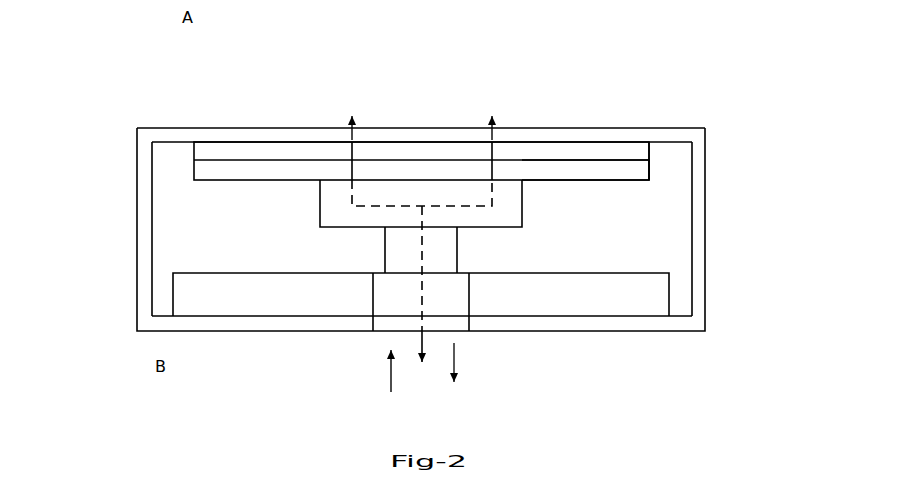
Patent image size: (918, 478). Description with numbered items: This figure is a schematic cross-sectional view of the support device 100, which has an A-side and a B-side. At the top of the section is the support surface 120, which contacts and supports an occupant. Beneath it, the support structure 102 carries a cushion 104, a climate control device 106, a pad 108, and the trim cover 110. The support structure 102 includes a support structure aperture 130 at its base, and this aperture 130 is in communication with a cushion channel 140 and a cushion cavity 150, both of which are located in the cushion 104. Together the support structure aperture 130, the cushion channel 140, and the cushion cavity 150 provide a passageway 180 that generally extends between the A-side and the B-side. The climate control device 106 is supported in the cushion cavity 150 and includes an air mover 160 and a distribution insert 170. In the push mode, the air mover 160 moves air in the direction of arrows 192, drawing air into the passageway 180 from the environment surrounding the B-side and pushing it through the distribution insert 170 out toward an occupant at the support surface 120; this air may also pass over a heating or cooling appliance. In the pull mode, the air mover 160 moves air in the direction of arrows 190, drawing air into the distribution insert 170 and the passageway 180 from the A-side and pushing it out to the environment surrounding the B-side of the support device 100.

The support device 100 is at (160, 100).
The support structure 102 is at (210, 272).
The cushion 104 is at (180, 192).
The climate control device 106 is at (227, 168).
The pad 108 is at (288, 150).
The trim cover 110 is at (145, 295).
The support surface 120 is at (550, 135).
The support structure aperture 130 is at (470, 331).
The cushion channel 140 is at (390, 257).
The cushion cavity 150 is at (630, 178).
The air mover 160 is at (523, 219).
The distribution insert 170 is at (578, 168).
The passageway 180 is at (456, 219).
The arrows 190 is at (420, 315).
The arrows 192 is at (355, 150).